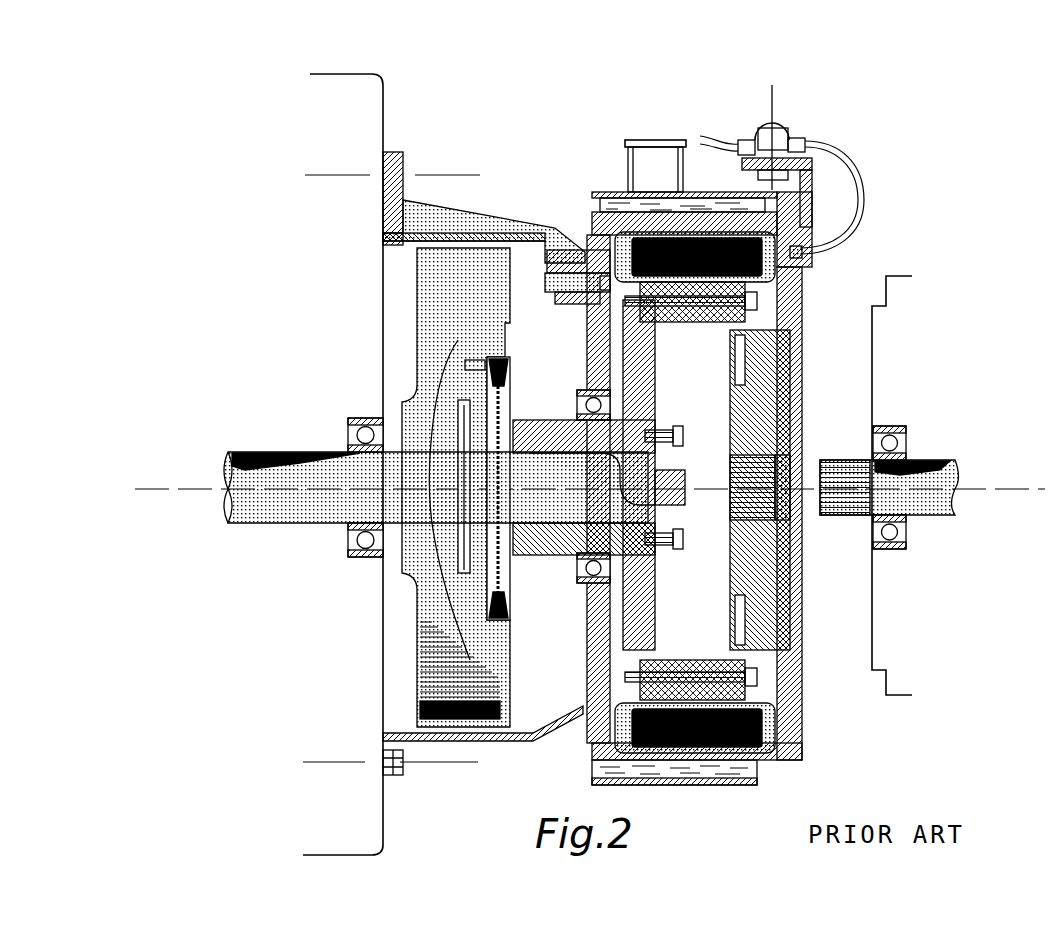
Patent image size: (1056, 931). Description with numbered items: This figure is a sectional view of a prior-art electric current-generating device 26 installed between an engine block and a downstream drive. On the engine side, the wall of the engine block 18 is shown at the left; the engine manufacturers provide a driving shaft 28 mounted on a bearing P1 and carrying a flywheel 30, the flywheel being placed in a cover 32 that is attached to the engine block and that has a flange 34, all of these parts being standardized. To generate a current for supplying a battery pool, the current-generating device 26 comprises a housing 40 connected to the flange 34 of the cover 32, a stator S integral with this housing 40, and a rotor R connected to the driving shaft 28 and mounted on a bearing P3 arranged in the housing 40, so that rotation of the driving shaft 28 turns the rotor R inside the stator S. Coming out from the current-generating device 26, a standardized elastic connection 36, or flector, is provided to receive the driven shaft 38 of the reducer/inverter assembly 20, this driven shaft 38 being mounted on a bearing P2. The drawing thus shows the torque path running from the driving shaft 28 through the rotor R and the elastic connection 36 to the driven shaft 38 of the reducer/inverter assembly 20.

The engine block wall 18 is at (371, 464).
The reducer/inverter assembly 20 is at (892, 338).
The current-generating device 26 is at (652, 128).
The driving shaft 28 is at (250, 515).
The flywheel 30 is at (418, 682).
The cover 32 is at (395, 231).
The flange 34 is at (556, 262).
The elastic connection 36 is at (770, 550).
The driven shaft 38 is at (950, 470).
The housing 40 is at (578, 668).
The bearing P1 is at (350, 418).
The bearing P2 is at (905, 550).
The bearing P3 is at (592, 583).
The rotor R is at (645, 366).
The stator S is at (760, 230).